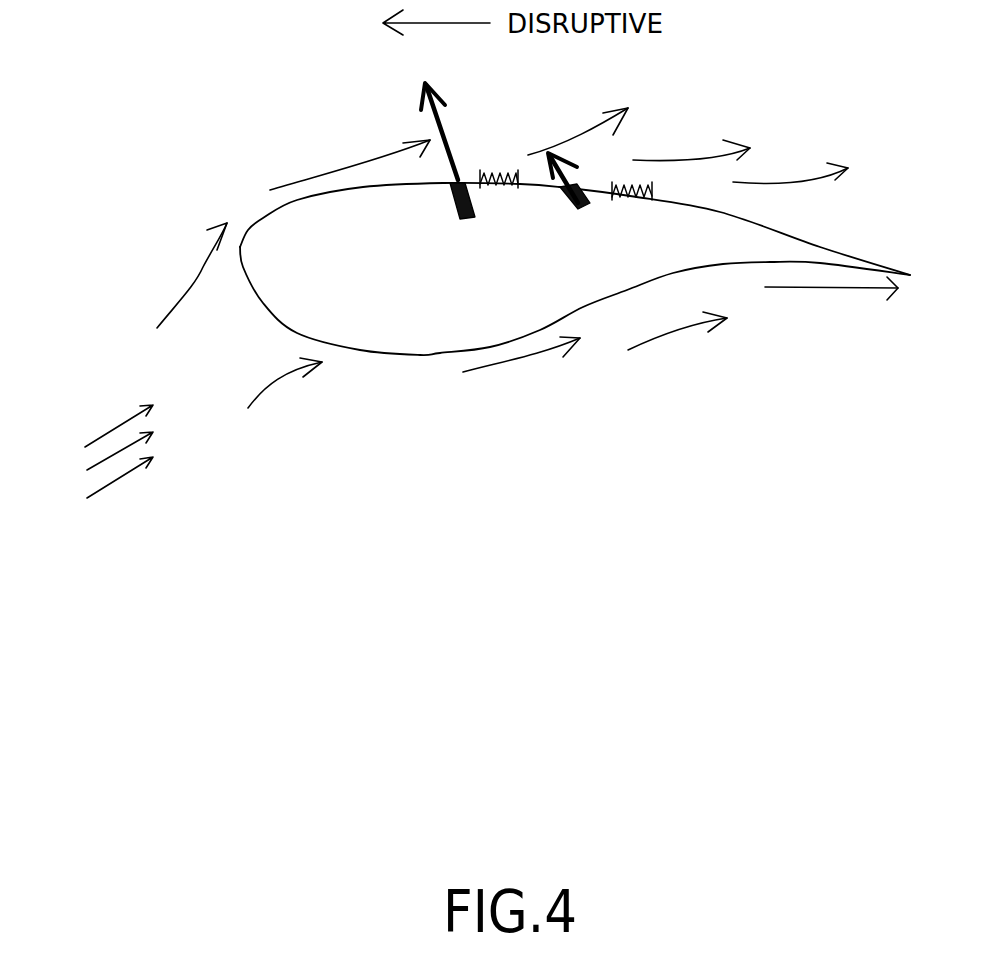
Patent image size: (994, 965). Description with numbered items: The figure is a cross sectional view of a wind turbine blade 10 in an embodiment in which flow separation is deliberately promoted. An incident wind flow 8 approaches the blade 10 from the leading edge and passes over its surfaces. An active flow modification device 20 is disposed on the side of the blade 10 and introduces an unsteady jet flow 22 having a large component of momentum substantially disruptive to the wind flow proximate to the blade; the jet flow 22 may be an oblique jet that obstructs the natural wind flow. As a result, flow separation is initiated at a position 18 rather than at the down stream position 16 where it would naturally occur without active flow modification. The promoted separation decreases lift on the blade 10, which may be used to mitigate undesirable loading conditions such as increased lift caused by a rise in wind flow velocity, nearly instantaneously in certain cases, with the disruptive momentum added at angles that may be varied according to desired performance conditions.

The wind flow 8 is at (88, 470).
The wind turbine blade 10 is at (705, 465).
The down stream position 16 is at (630, 200).
The flow separation point position 18 is at (508, 187).
The active flow modification device 20 is at (457, 203).
The unsteady jet flow 22 is at (447, 103).